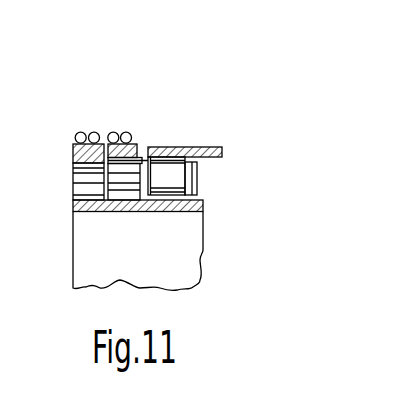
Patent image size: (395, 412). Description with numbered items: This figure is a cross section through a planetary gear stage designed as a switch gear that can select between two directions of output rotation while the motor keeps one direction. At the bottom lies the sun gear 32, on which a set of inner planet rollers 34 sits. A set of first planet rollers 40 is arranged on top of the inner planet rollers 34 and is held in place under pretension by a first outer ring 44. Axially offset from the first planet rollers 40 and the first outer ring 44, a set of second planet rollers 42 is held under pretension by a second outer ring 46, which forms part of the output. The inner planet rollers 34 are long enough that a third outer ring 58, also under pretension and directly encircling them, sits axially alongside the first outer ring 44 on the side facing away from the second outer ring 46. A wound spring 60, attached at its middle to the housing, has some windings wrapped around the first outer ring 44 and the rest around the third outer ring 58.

The wound spring 60 is at (82, 135).
The third outer ring 58 is at (73, 152).
The inner planet rollers 34 is at (87, 188).
The first outer ring 44 is at (137, 146).
The second outer ring 46 is at (192, 147).
The second planet rollers 42 is at (172, 170).
The first planet rollers 40 is at (143, 210).
The sun gear 32 is at (75, 212).